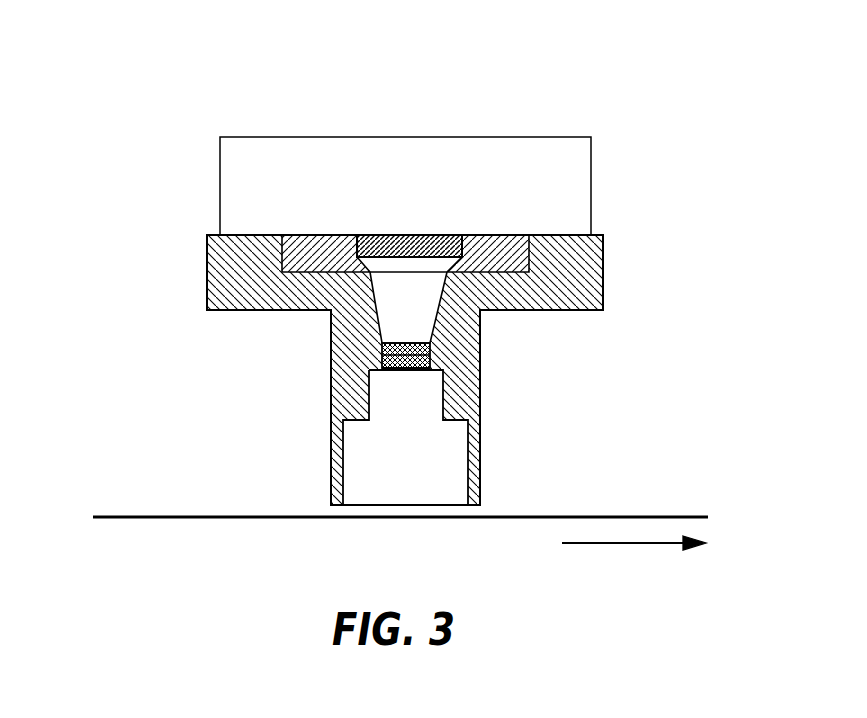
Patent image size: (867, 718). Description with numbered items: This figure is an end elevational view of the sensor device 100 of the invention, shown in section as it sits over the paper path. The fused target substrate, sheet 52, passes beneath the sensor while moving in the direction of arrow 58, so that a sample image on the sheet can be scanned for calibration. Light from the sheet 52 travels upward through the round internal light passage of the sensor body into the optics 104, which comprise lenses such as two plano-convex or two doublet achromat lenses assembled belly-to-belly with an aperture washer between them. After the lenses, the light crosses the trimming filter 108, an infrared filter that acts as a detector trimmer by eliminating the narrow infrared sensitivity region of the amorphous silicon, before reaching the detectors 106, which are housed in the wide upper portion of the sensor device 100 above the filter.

The sensor device 100 is at (173, 129).
The detectors 106 is at (582, 147).
The trimming filter 108 is at (363, 235).
The optics 104 is at (416, 371).
The sheet 52 is at (178, 519).
The direction of sheet travel 58 is at (618, 545).